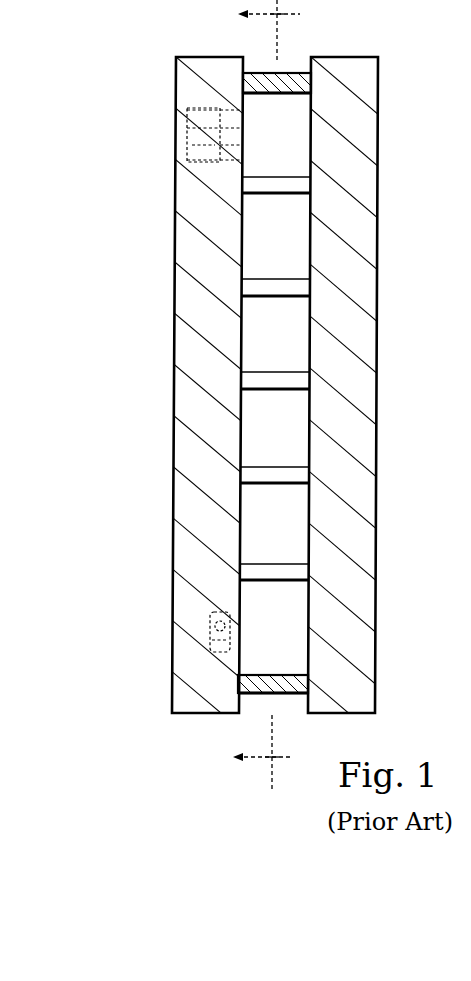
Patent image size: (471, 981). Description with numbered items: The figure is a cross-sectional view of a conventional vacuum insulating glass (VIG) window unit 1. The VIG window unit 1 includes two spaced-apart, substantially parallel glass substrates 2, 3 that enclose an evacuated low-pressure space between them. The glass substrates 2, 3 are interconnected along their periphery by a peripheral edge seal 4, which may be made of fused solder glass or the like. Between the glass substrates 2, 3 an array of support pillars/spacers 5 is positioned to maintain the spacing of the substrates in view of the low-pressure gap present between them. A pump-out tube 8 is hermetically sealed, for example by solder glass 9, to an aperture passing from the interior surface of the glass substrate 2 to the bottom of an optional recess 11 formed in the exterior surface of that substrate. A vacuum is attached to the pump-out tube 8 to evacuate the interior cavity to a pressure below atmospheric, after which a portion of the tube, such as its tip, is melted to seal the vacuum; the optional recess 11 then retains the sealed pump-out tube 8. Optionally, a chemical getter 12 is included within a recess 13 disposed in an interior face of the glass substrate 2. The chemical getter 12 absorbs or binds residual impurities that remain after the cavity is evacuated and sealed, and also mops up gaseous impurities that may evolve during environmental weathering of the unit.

The VIG window unit 1 is at (396, 164).
The glass substrate 2 is at (181, 449).
The glass substrate 3 is at (353, 285).
The peripheral edge seal 4 is at (286, 78).
The support pillars/spacers 5 is at (262, 573).
The pump-out tube 8 is at (184, 136).
The solder glass 9 is at (206, 117).
The recess 11 is at (198, 163).
The chemical getter 12 is at (209, 623).
The recess 13 is at (209, 663).